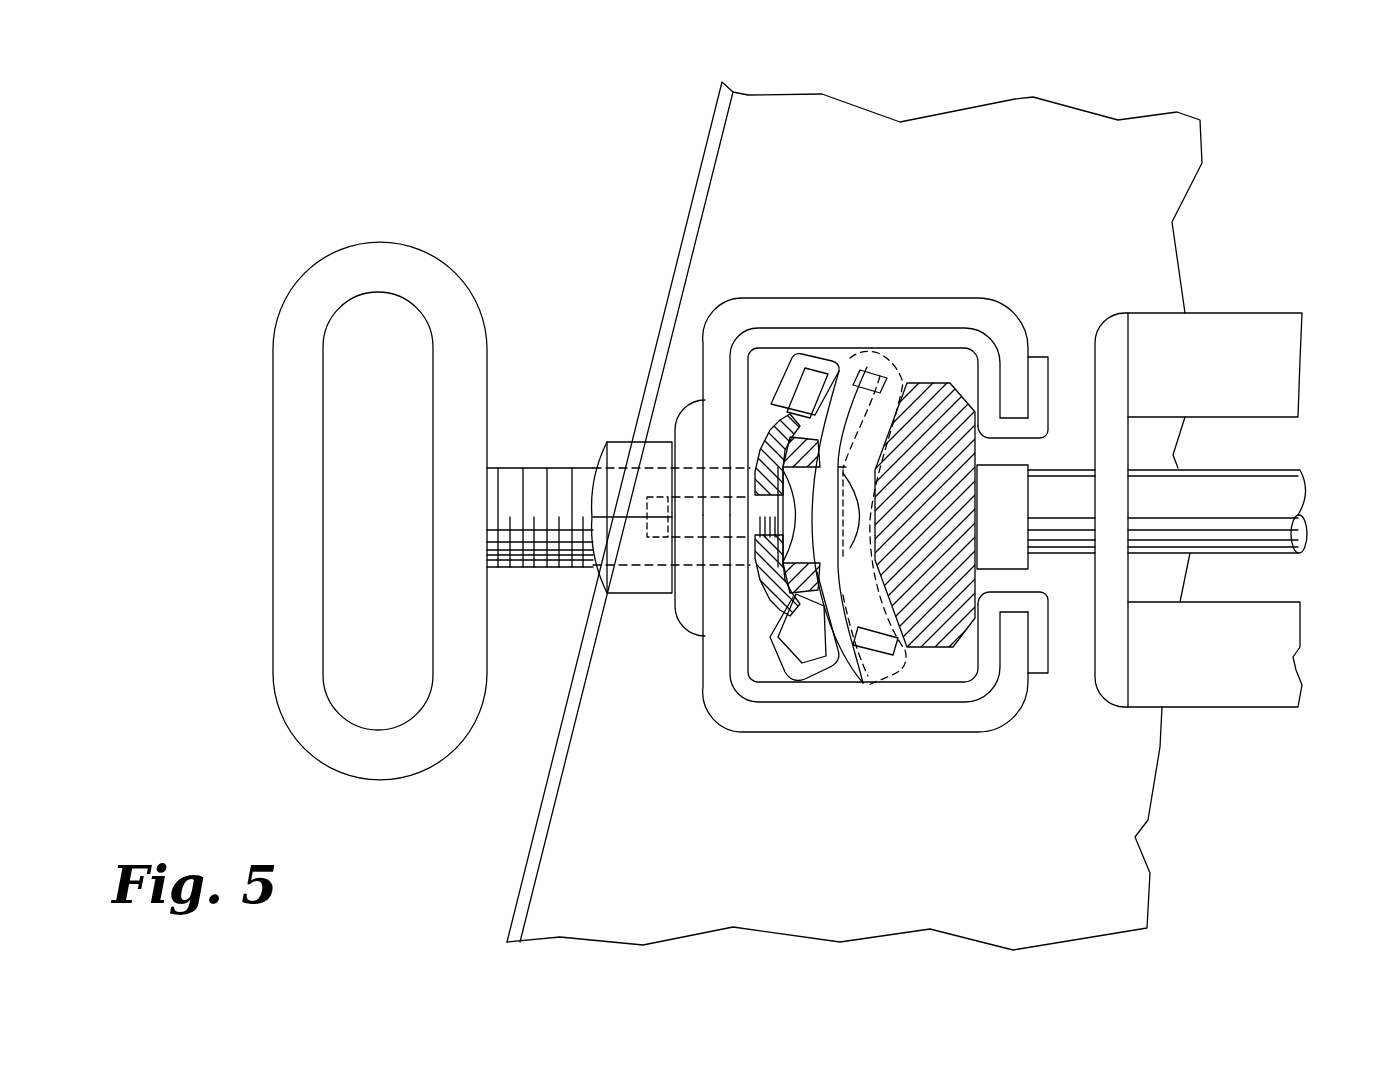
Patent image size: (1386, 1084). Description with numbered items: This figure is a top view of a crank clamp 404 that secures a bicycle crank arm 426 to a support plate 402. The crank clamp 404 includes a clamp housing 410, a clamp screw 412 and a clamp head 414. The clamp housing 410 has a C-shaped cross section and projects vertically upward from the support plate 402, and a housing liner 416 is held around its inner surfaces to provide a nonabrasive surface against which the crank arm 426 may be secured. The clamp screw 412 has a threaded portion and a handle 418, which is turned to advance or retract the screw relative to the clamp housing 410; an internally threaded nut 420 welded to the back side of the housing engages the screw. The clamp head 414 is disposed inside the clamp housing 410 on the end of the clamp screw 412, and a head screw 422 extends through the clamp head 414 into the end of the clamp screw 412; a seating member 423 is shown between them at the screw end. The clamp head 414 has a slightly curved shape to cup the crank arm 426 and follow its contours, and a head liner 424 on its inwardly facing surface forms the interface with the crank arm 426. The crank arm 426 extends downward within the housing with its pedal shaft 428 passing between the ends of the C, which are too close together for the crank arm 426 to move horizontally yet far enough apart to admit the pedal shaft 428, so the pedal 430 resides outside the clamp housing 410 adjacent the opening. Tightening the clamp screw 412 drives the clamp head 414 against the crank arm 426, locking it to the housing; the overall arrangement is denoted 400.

The clamp assembly 400 is at (503, 220).
The support plate 402 is at (558, 903).
The crank clamp 404 is at (722, 305).
The clamp housing 410 is at (1010, 330).
The clamp screw 412 is at (566, 568).
The clamp head 414 is at (875, 368).
The housing liner 416 is at (920, 343).
The handle 418 is at (275, 378).
The nut 420 is at (621, 448).
The head screw 422 is at (863, 690).
The spherical washer 423 is at (762, 448).
The head liner 424 is at (843, 372).
The crank arm 426 is at (921, 625).
The pedal shaft 428 is at (1065, 560).
The pedal 430 is at (1215, 705).